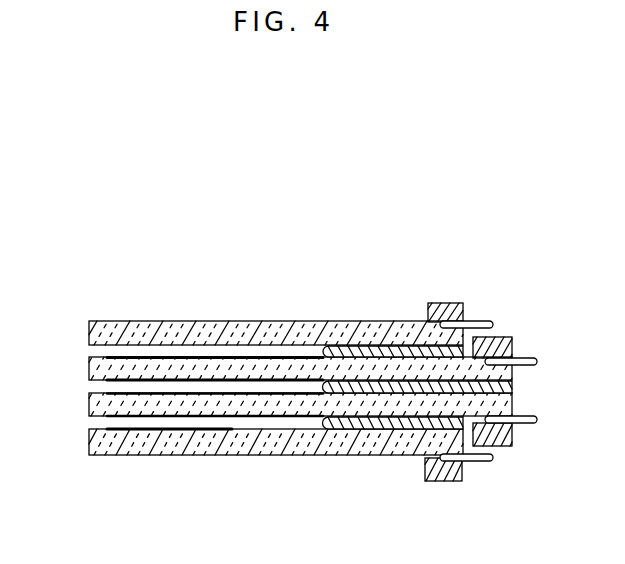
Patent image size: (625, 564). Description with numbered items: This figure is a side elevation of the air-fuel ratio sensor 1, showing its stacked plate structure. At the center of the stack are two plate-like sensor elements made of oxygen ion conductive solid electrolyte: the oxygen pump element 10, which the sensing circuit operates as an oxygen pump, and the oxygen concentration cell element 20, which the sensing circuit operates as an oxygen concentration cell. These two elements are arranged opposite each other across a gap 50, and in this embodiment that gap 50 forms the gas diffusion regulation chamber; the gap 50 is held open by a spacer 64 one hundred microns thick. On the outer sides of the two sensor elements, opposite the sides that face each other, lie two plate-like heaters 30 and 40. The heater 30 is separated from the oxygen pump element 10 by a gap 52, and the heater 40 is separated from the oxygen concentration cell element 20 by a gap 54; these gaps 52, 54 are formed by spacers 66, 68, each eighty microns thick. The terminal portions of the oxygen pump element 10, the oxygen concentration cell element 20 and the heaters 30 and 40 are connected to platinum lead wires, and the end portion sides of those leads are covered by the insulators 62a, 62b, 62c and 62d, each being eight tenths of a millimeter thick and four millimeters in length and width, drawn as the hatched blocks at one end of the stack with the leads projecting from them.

The air-fuel ratio sensor 1 is at (82, 291).
The oxygen pump element 10 is at (89, 368).
The oxygen concentration cell element 20 is at (88, 405).
The heater 30 is at (88, 327).
The heater 40 is at (88, 447).
The gap 50 is at (90, 387).
The gap 52 is at (88, 350).
The gap 54 is at (91, 423).
The insulator 62a is at (512, 350).
The insulator 62b is at (512, 433).
The insulator 62c is at (463, 313).
The insulator 62d is at (462, 470).
The spacer 64 is at (512, 389).
The spacer 66 is at (385, 356).
The spacer 68 is at (385, 429).